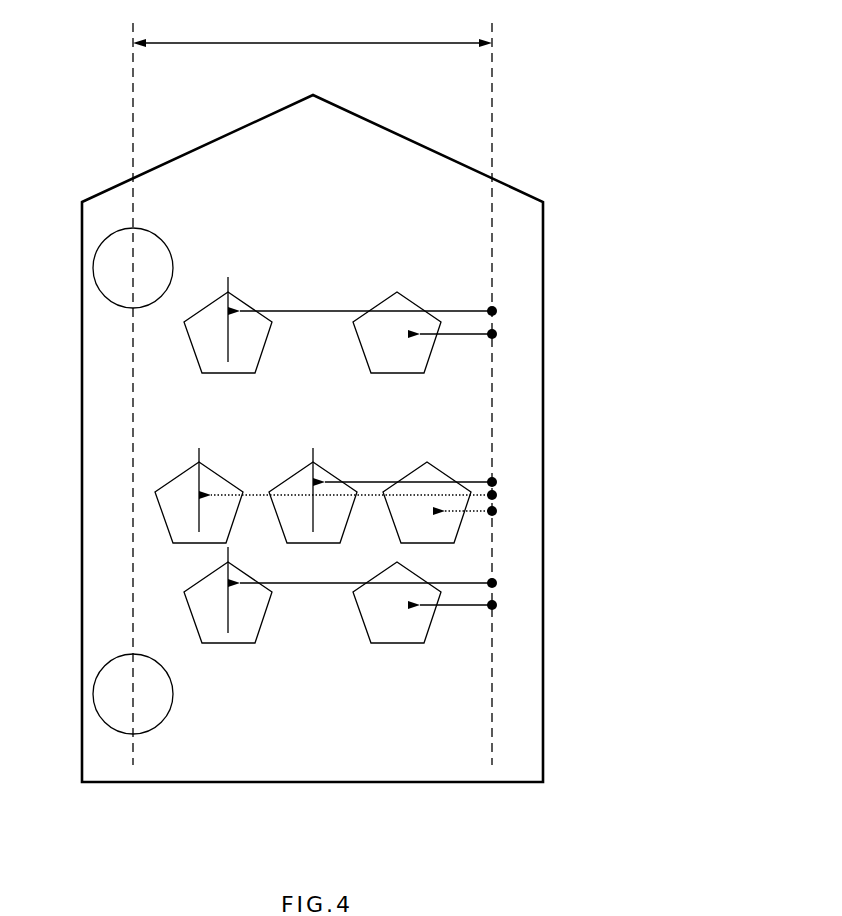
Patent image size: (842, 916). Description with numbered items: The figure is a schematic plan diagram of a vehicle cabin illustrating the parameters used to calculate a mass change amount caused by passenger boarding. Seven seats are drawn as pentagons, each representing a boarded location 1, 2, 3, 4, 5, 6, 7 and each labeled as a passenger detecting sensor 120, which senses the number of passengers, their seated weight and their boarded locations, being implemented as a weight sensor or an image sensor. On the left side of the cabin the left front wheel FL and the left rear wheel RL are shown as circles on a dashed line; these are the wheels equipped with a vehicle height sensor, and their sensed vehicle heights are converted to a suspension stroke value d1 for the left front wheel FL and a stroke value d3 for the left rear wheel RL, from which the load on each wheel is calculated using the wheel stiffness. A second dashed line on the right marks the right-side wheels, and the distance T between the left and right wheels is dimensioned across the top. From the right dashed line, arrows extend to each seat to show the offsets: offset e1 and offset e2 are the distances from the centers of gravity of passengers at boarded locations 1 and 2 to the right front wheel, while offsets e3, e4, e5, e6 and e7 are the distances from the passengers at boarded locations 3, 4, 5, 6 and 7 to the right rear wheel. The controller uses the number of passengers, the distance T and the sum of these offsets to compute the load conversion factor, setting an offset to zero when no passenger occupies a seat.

The passenger detecting sensor 120 is at (314, 473).
The boarded location 1 is at (228, 325).
The boarded location 2 is at (397, 332).
The boarded location 3 is at (199, 495).
The boarded location 4 is at (313, 495).
The boarded location 5 is at (427, 502).
The boarded location 6 is at (228, 595).
The boarded location 7 is at (397, 602).
The offset e1 is at (368, 301).
The offset e2 is at (458, 346).
The offset e3 is at (354, 485).
The offset e4 is at (411, 472).
The offset e5 is at (471, 520).
The offset e6 is at (368, 594).
The offset e7 is at (458, 617).
The distance between the left and right wheels T is at (312, 29).
The left front wheel FL is at (133, 268).
The left rear wheel RL is at (133, 694).
The stroke value d1 is at (68, 270).
The stroke value d3 is at (68, 694).